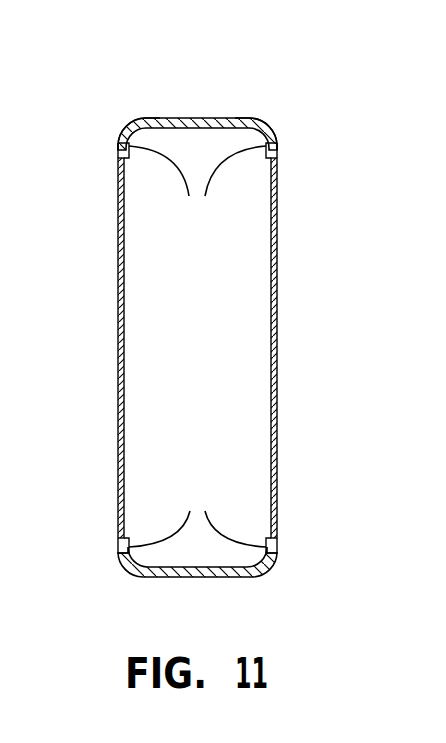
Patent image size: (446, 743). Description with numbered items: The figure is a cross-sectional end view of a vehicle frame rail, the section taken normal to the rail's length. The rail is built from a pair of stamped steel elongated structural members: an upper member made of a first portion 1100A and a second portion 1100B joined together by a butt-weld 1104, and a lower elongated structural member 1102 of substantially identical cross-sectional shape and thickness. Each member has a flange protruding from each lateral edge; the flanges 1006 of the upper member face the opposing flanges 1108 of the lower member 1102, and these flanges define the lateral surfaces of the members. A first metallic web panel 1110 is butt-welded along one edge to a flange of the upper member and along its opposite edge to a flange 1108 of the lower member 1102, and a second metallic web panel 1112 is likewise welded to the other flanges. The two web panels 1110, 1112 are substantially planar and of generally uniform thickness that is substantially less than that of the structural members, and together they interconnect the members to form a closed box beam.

The first portion of elongated structural member 1100A is at (150, 120).
The second portion of elongated structural member 1100B is at (237, 119).
The butt-weld 1104 is at (203, 118).
The top curved tabs 1006 is at (197, 184).
The first metallic web panel 1110 is at (117, 246).
The second metallic web panel 1112 is at (277, 240).
The flange 1108 is at (197, 516).
The elongated structural member 1102 is at (168, 578).